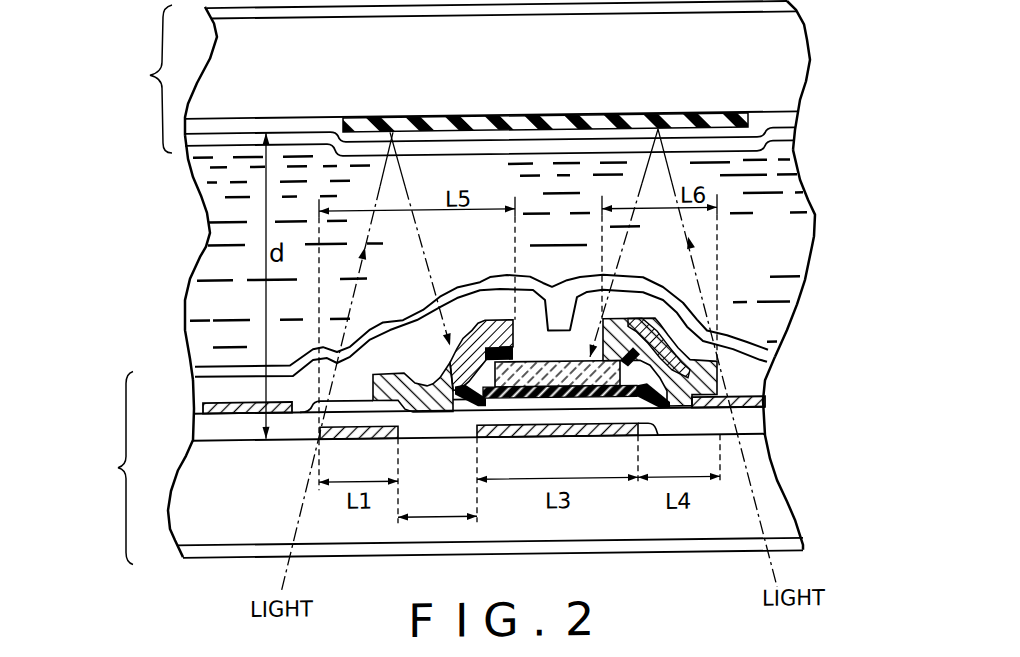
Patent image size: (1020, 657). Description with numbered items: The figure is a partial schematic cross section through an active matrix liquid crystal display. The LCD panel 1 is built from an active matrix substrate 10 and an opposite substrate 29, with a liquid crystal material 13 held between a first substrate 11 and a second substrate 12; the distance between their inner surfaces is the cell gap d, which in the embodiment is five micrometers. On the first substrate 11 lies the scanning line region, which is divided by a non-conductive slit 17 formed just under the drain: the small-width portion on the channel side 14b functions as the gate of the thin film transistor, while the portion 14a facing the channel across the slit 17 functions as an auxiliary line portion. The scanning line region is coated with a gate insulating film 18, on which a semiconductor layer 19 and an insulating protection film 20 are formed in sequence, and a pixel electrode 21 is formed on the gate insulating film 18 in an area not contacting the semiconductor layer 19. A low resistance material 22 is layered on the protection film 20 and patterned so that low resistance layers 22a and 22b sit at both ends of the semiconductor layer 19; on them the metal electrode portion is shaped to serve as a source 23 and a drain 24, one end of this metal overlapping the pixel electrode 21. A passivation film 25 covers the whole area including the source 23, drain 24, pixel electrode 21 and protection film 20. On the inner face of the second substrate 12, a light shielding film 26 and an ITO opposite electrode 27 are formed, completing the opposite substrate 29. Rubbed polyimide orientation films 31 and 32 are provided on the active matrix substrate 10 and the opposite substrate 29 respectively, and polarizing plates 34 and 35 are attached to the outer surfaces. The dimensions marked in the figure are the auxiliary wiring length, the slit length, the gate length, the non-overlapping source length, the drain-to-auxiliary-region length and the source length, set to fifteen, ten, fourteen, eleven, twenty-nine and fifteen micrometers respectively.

The LCD panel 1 is at (113, 124).
The active matrix substrate 10 is at (105, 468).
The first substrate 11 is at (778, 521).
The second substrate 12 is at (800, 71).
The liquid crystal material 13 is at (213, 232).
The auxiliary line portion 14a is at (380, 436).
The channel side portion 14b is at (650, 432).
The slit 17 is at (450, 519).
The gate insulating film 18 is at (767, 430).
The semiconductor layer 19 is at (545, 393).
The insulating protection film 20 is at (552, 361).
The pixel electrode 21 is at (200, 401).
The low resistance material 22 is at (622, 322).
The low resistance layer 22a is at (462, 338).
The low resistance layer 22b is at (672, 360).
The source 23 is at (645, 332).
The drain 24 is at (390, 371).
The passivation film 25 is at (770, 383).
The light shielding film 26 is at (560, 124).
The ITO opposite electrode 27 is at (787, 124).
The opposite substrate 29 is at (140, 79).
The orientation film 31 is at (770, 358).
The orientation film 32 is at (783, 136).
The polarizing plate 34 is at (805, 547).
The polarizing plate 35 is at (783, 10).